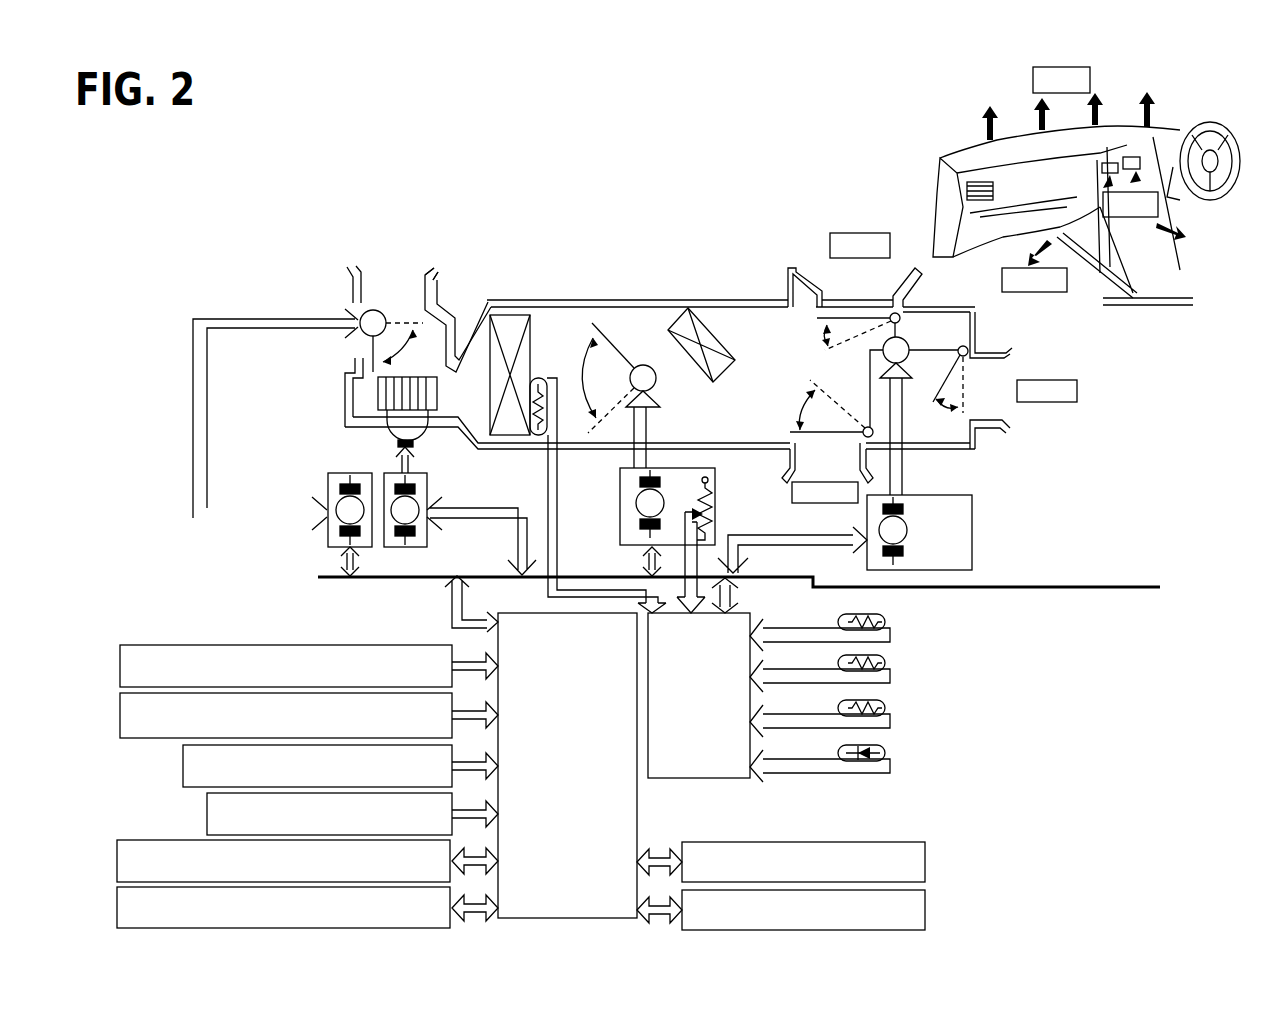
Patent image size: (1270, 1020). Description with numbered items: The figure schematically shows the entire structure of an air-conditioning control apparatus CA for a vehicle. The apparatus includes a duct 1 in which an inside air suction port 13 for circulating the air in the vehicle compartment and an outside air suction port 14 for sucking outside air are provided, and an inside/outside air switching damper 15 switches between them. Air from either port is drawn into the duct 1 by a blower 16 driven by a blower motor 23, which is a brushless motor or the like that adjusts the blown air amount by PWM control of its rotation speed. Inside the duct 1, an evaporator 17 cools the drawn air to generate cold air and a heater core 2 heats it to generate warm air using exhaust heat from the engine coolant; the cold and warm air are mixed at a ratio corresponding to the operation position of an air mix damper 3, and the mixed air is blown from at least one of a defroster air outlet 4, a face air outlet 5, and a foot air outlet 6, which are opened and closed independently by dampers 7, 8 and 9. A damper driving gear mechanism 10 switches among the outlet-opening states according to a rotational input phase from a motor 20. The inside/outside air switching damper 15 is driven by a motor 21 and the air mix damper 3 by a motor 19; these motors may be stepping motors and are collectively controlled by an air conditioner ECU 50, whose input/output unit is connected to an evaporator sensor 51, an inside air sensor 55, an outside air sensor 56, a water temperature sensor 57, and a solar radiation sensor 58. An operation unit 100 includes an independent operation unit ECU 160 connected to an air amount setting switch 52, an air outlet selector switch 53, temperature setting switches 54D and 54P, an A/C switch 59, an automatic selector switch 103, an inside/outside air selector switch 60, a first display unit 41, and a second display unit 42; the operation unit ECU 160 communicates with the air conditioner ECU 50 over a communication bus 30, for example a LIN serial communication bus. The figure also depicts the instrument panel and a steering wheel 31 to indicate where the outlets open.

The duct 1 is at (712, 299).
The heater core 2 is at (668, 305).
The air mix damper 3 is at (605, 300).
The defroster air outlet 4 is at (793, 266).
The face air outlet 5 is at (1010, 350).
The foot air outlet 6 is at (782, 490).
The damper 7 is at (817, 318).
The damper 8 is at (943, 388).
The damper 9 is at (790, 432).
The damper driving gear mechanism 10 is at (910, 342).
The inside air suction port 13 is at (355, 266).
The outside air suction port 14 is at (357, 338).
The inside/outside air switching damper 15 is at (365, 350).
The blower 16 is at (386, 433).
The evaporator 17 is at (502, 315).
The motor 19 is at (716, 478).
The motor 20 is at (972, 502).
The motor 21 is at (328, 537).
The blower motor 23 is at (427, 488).
The communication bus 30 is at (1125, 592).
The steering wheel 31 is at (1218, 224).
The first display unit 41 is at (928, 862).
The second display unit 42 is at (928, 910).
The air conditioner ECU 50 is at (680, 782).
The evaporator sensor 51 is at (545, 378).
The air amount setting switch 52 is at (120, 717).
The air outlet selector switch 53 is at (120, 667).
The temperature setting switch 54D is at (279, 766).
The temperature setting switch 54P is at (183, 767).
The inside air sensor 55 is at (886, 622).
The outside air sensor 56 is at (886, 667).
The water temperature sensor 57 is at (886, 712).
The solar radiation sensor 58 is at (886, 757).
The A/C switch 59 is at (207, 814).
The inside/outside air selector switch 60 is at (117, 862).
The operation unit 100 is at (284, 619).
The automatic selector switch 103 is at (117, 909).
The operation unit ECU 160 is at (550, 613).
The air-conditioning control apparatus CA is at (630, 152).